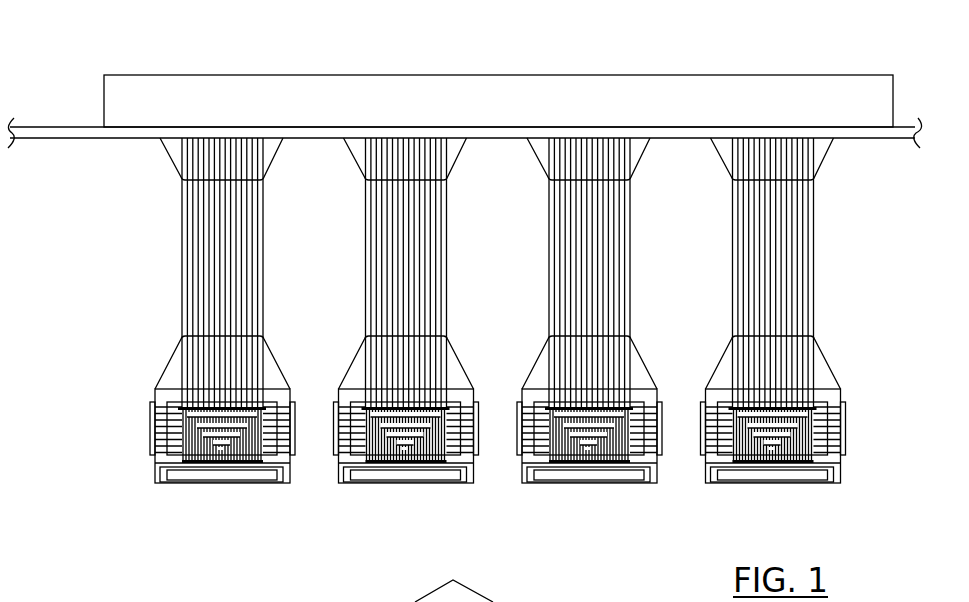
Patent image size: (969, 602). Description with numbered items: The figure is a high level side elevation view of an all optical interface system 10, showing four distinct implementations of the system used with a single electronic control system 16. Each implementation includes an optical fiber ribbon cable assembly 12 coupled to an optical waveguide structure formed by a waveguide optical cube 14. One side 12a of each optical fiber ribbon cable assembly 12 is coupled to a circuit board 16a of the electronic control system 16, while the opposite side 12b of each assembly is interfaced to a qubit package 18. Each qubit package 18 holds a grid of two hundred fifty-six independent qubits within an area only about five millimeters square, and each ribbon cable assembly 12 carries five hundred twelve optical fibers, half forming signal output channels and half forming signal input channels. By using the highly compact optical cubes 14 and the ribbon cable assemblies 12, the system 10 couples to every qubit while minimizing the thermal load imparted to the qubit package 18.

The all optical interface system 10 is at (872, 142).
The optical fiber ribbon cable assembly 12 is at (178, 269).
The one side of the optical fiber ribbon cable assembly 12a is at (178, 155).
The opposite side of the optical fiber ribbon cable assembly 12b is at (177, 367).
The waveguide optical cube 14 is at (147, 434).
The electronic control system 16 is at (873, 114).
The circuit board 16a is at (60, 127).
The qubit package 18 is at (217, 477).